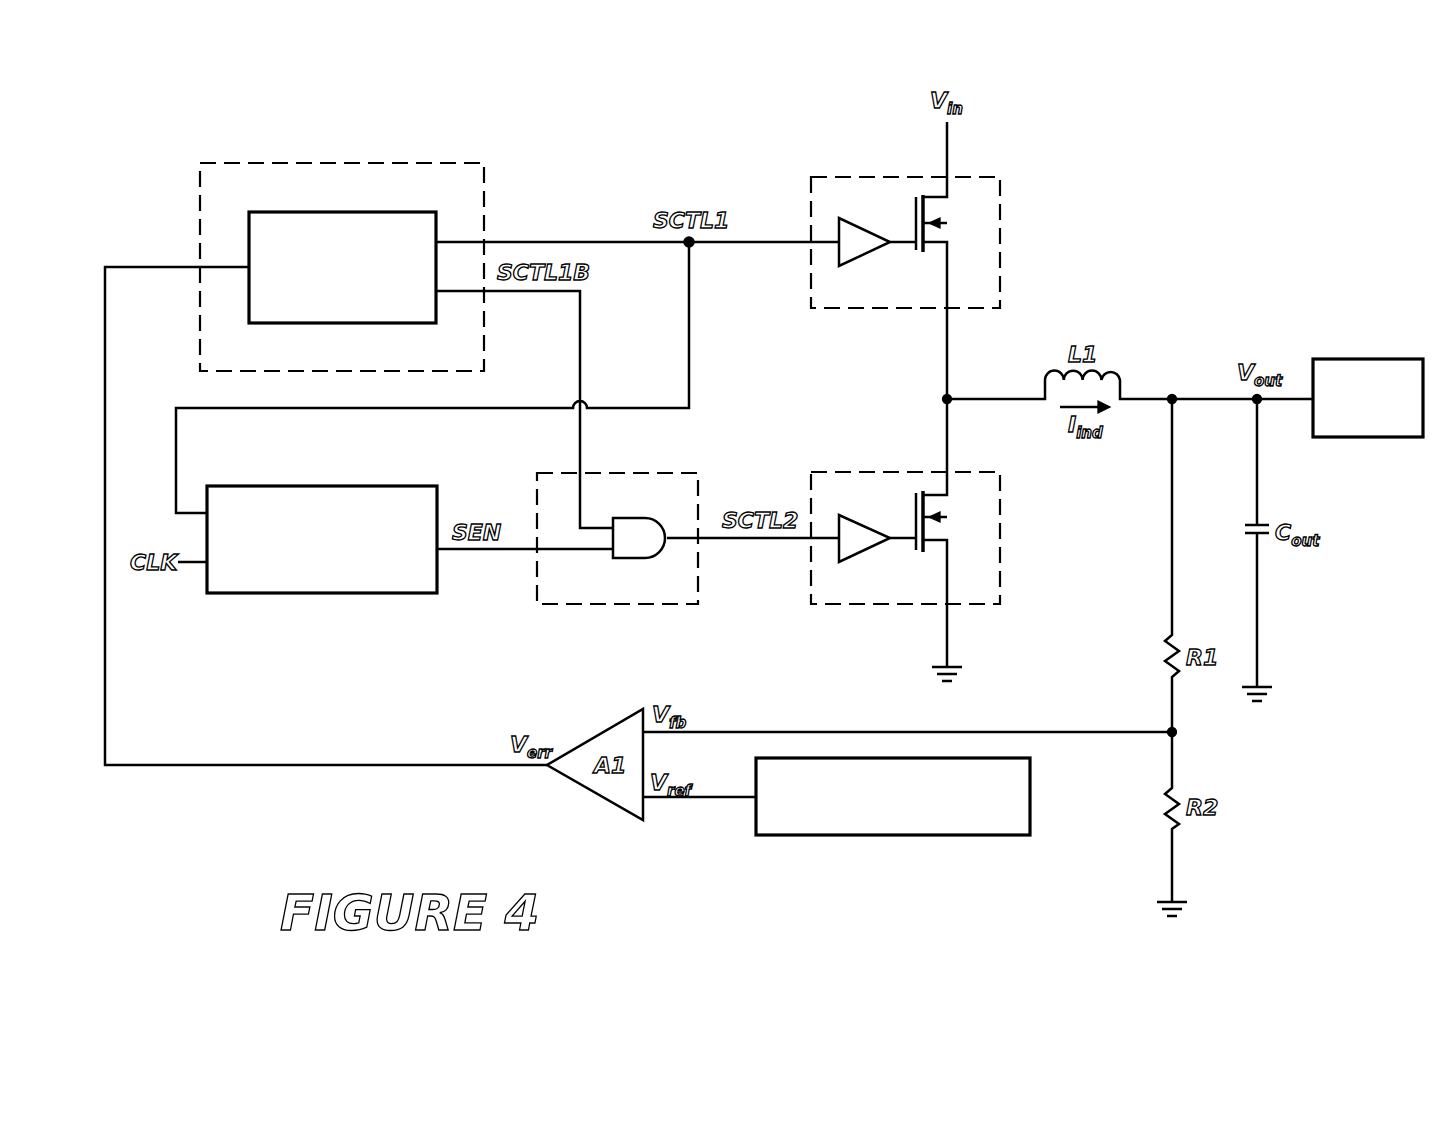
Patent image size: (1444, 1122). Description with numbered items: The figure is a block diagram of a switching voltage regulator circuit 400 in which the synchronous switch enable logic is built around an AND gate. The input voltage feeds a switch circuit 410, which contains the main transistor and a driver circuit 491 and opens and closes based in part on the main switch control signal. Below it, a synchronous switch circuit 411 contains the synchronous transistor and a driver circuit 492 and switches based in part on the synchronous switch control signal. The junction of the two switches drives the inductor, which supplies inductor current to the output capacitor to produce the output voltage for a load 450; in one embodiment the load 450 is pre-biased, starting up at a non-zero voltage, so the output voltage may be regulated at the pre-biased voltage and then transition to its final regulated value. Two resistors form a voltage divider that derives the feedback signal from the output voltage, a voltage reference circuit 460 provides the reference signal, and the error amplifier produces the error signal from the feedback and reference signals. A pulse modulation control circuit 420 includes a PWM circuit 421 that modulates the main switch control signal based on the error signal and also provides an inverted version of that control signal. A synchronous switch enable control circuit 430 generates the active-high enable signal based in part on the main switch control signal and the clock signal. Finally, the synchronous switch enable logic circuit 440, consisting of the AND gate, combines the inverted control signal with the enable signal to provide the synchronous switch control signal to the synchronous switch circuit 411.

The switching voltage regulator circuit 400 is at (1222, 226).
The switch circuit 410 is at (872, 177).
The synchronous switch circuit 411 is at (872, 472).
The pulse modulation control circuit 420 is at (448, 163).
The PWM circuit 421 is at (382, 212).
The synchronous switch enable control circuit 430 is at (385, 486).
The synchronous switch enable logic circuit 440 is at (655, 473).
The load 450 is at (1367, 359).
The voltage reference circuit 460 is at (978, 835).
The driver circuit 491 is at (862, 256).
The driver circuit 492 is at (862, 552).